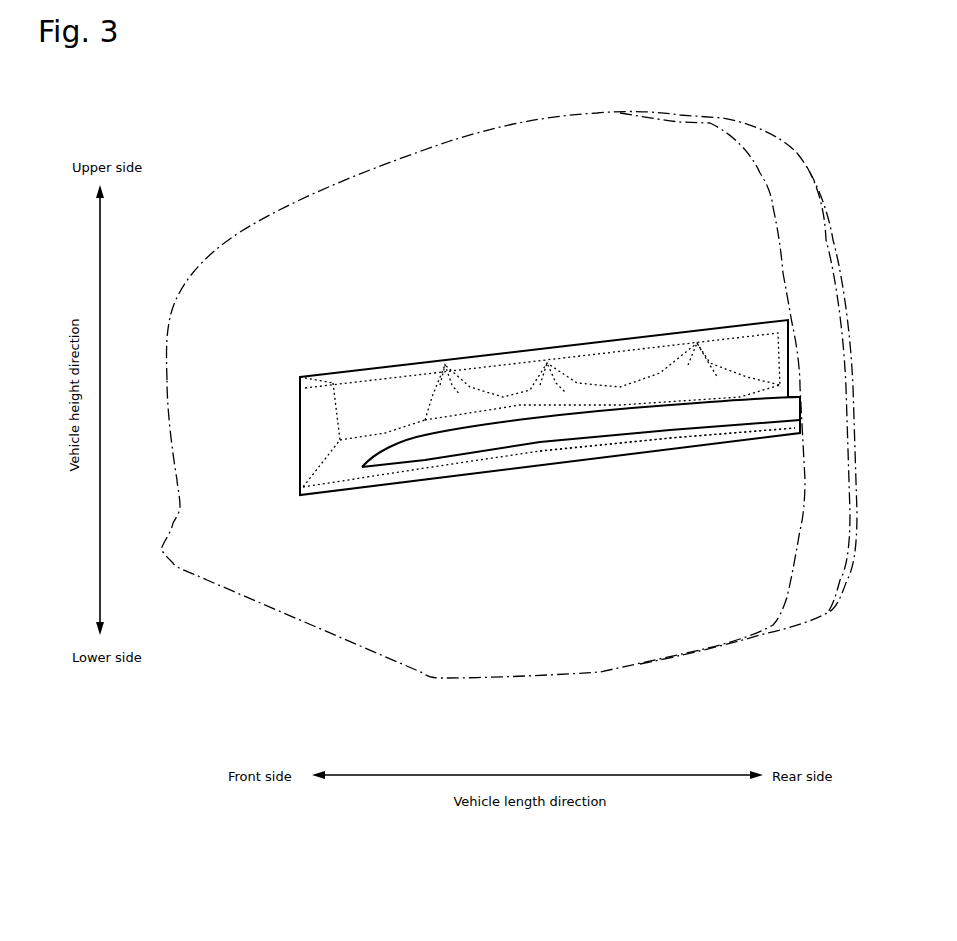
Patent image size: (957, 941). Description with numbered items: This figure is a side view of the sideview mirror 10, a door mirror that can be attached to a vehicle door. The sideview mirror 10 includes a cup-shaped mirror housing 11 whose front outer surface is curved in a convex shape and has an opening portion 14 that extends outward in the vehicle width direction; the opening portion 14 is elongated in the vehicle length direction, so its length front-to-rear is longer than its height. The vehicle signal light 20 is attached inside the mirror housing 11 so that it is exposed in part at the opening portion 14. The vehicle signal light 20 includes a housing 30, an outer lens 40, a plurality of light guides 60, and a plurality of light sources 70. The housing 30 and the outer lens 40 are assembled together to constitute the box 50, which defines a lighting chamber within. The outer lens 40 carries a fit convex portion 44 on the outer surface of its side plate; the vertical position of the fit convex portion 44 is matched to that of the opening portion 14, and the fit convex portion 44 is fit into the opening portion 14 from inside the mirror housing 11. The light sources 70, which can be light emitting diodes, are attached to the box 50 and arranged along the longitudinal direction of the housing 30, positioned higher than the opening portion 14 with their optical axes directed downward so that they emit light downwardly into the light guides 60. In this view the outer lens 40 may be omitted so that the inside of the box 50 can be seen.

The sideview mirror 10 is at (238, 135).
The mirror housing 11 is at (452, 156).
The opening portion 14 is at (620, 424).
The vehicle signal light 20 is at (676, 310).
The housing 30 is at (350, 405).
The outer lens 40 is at (315, 428).
The fit convex portion 44 is at (492, 433).
The box 50 is at (303, 328).
The light guide 60 is at (403, 415).
The light source 70 is at (444, 380).